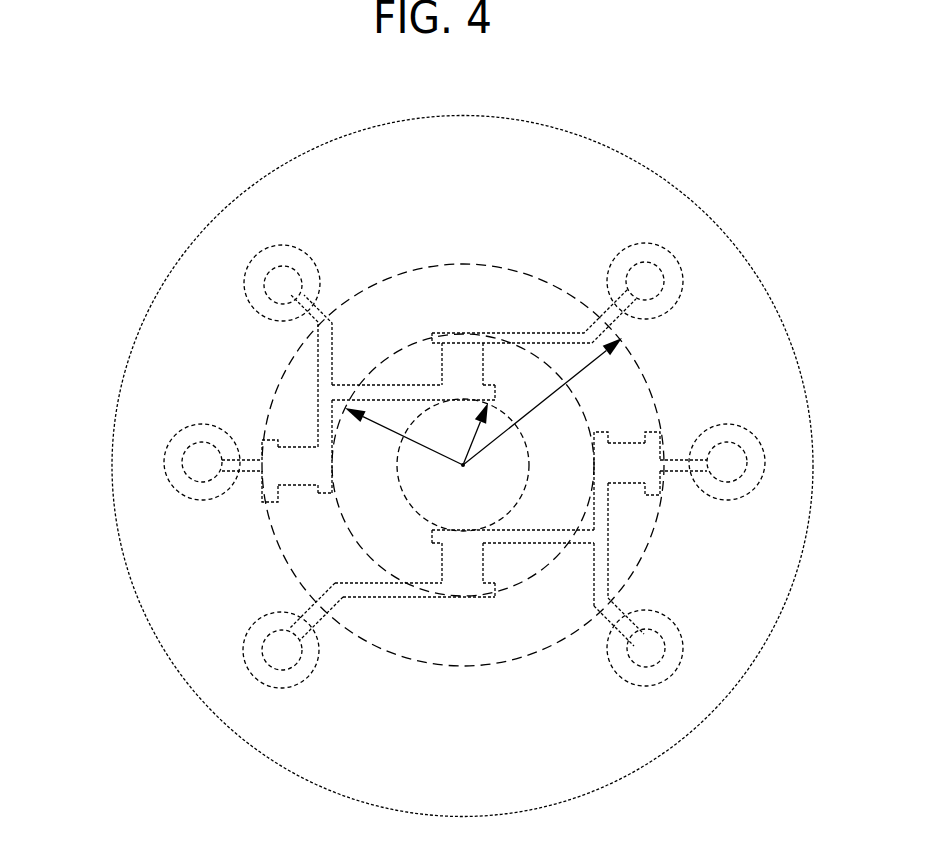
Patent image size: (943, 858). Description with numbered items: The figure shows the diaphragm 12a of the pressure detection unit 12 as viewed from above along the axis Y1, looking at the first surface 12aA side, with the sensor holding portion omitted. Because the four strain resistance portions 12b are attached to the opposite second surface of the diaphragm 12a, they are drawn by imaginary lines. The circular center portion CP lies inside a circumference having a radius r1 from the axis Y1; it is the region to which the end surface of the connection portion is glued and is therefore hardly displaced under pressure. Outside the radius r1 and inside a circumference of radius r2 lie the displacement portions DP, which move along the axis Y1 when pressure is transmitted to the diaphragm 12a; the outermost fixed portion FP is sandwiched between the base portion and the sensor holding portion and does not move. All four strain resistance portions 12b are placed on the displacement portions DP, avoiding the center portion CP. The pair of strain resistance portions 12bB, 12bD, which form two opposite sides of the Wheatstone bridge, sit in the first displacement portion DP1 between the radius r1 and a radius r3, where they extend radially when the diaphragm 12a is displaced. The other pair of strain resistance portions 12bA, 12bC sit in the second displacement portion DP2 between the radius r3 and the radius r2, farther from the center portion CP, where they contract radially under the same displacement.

The sensor element 12 is at (731, 721).
The diaphragm 12a is at (720, 228).
The first surface 12aA is at (317, 197).
The strain resistance portions 12b is at (464, 464).
The strain resistance portion 12bA is at (656, 430).
The strain resistance portion 12bB is at (468, 331).
The strain resistance portion 12bC is at (275, 438).
The strain resistance portion 12bD is at (465, 600).
The fixed portion FP is at (129, 547).
The center portion CP is at (413, 509).
The displacement portions DP is at (673, 555).
The first displacement portion DP1 is at (581, 511).
The second displacement portion DP2 is at (631, 568).
The radius r1 is at (463, 465).
The radius r2 is at (463, 465).
The radius r3 is at (463, 465).
The axis Y1 is at (463, 465).